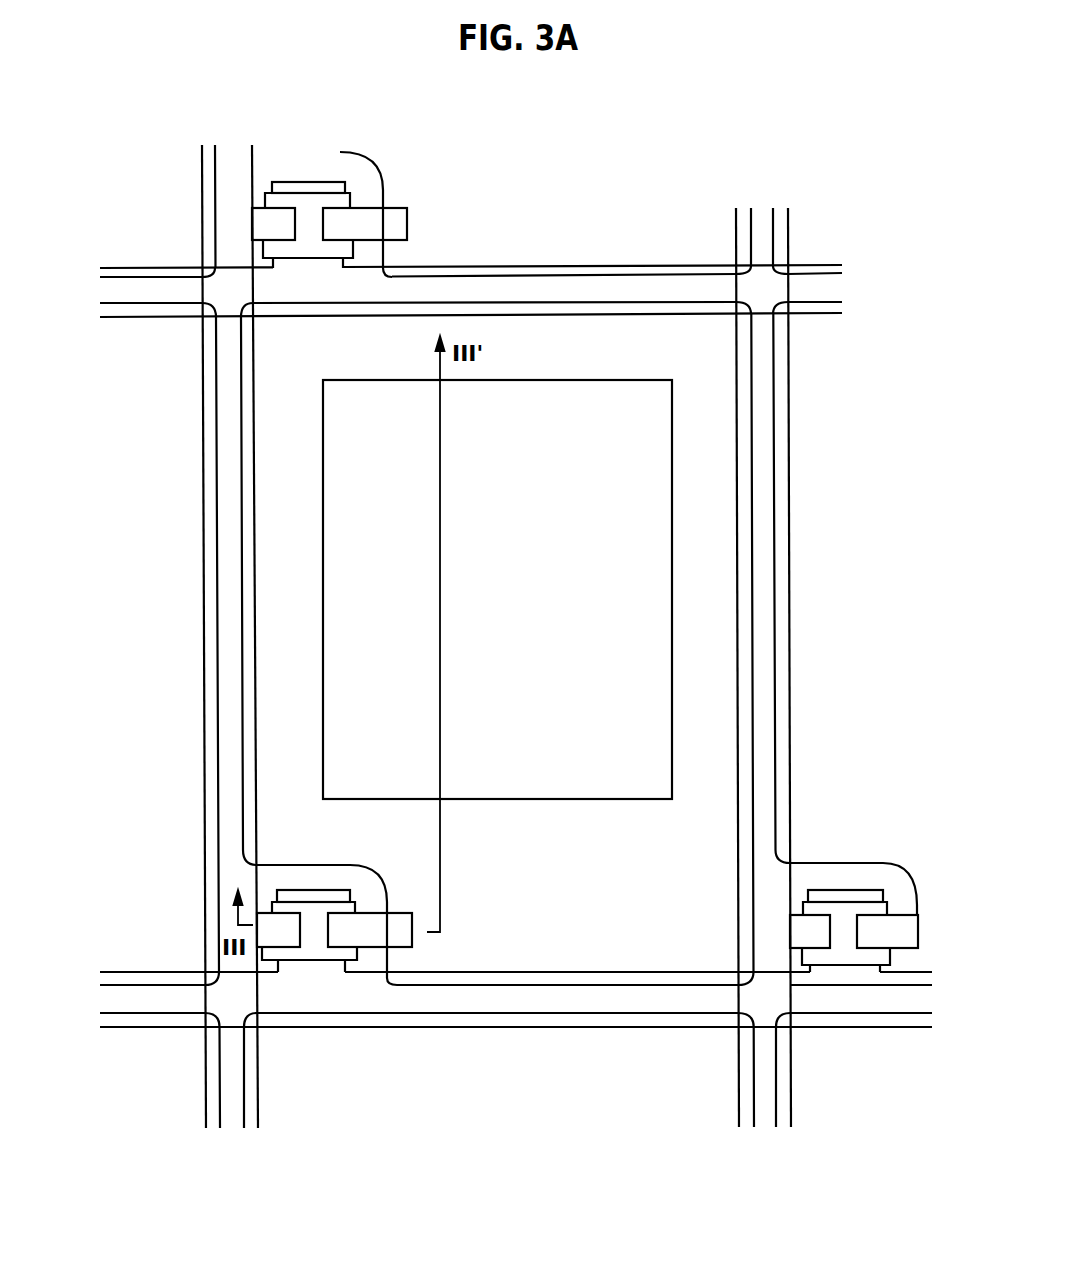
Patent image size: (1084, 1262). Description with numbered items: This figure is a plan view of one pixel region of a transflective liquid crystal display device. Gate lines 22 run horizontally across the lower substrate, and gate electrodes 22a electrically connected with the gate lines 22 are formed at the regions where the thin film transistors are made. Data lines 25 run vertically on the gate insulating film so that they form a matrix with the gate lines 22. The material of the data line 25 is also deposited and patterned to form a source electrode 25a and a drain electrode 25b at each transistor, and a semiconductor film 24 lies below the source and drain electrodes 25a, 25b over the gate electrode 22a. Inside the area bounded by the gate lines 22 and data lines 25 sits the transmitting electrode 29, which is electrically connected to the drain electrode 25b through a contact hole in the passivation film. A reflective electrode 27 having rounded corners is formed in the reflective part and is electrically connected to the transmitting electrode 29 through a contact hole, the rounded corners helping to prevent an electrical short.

The gate line 22 is at (518, 995).
The gate electrode 22a is at (315, 968).
The semiconductor film 24 is at (315, 907).
The data line 25 is at (205, 575).
The source electrode 25a is at (285, 918).
The drain electrode 25b is at (373, 920).
The reflective electrode 27 is at (715, 697).
The transmitting electrode 29 is at (640, 547).